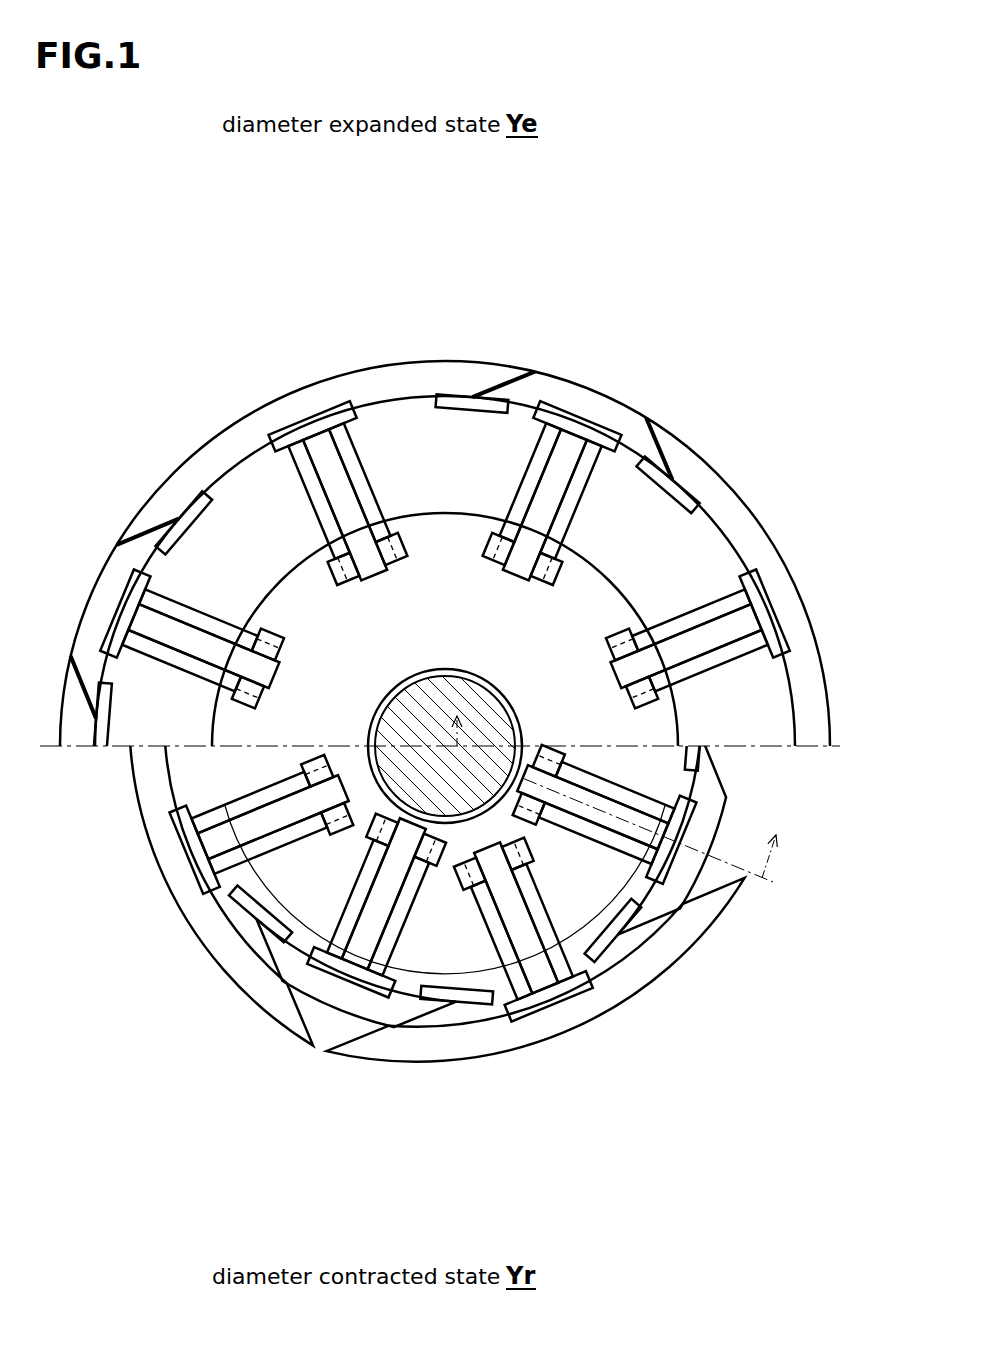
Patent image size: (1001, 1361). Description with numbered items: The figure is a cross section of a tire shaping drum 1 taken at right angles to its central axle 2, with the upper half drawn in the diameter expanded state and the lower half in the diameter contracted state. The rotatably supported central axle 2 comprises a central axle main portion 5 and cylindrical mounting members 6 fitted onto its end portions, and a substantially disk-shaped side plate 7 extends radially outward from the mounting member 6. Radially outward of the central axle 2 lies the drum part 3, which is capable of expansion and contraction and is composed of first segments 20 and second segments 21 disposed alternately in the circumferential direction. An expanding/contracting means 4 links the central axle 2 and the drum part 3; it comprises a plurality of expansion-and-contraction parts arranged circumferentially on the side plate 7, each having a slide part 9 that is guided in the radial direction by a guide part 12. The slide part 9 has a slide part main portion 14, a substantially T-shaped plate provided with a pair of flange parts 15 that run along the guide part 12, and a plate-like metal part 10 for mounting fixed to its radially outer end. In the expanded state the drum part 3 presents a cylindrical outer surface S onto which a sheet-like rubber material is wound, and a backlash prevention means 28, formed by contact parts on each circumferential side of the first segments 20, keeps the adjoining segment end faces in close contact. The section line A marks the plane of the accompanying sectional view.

The tire shaping drum 1 is at (612, 378).
The central axle 2 is at (64, 824).
The drum part 3 is at (525, 250).
The expanding/contracting means 4 is at (190, 242).
The central axle main portion 5 is at (405, 770).
The mounting member 6 is at (300, 770).
The side plate 7 is at (650, 742).
The slide part 9 is at (295, 268).
The plate-like metal part for mounting 10 is at (325, 462).
The guide part 12 is at (277, 440).
The slide part main portion 14 is at (341, 437).
The flange part 15 is at (358, 458).
The first segment 20 is at (586, 400).
The second segment 21 is at (548, 385).
The backlash prevention means 28 is at (473, 393).
The outer surface S is at (775, 540).
The section line A is at (617, 785).